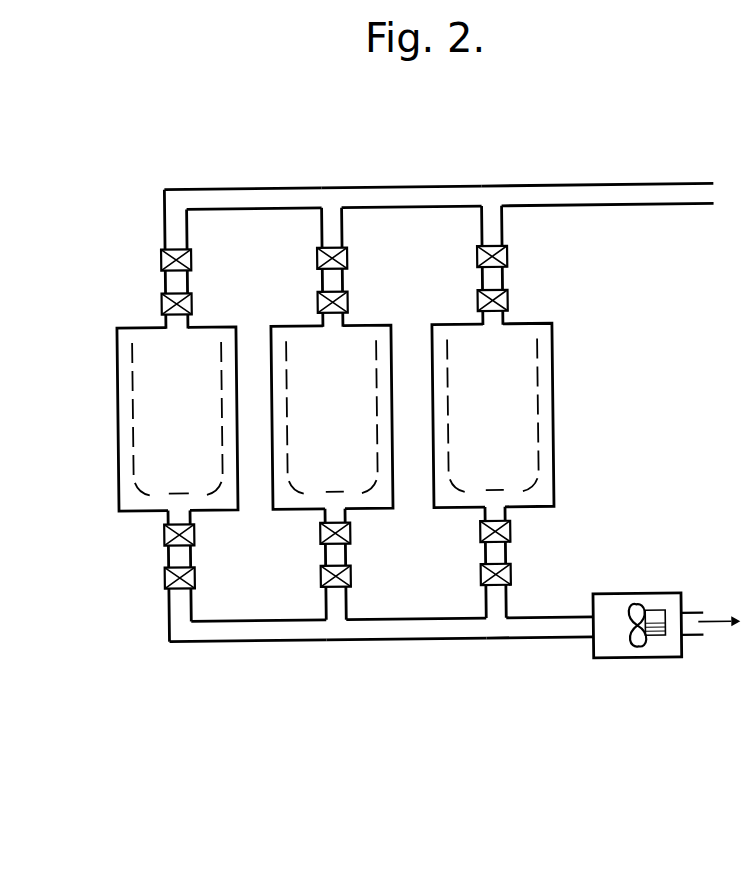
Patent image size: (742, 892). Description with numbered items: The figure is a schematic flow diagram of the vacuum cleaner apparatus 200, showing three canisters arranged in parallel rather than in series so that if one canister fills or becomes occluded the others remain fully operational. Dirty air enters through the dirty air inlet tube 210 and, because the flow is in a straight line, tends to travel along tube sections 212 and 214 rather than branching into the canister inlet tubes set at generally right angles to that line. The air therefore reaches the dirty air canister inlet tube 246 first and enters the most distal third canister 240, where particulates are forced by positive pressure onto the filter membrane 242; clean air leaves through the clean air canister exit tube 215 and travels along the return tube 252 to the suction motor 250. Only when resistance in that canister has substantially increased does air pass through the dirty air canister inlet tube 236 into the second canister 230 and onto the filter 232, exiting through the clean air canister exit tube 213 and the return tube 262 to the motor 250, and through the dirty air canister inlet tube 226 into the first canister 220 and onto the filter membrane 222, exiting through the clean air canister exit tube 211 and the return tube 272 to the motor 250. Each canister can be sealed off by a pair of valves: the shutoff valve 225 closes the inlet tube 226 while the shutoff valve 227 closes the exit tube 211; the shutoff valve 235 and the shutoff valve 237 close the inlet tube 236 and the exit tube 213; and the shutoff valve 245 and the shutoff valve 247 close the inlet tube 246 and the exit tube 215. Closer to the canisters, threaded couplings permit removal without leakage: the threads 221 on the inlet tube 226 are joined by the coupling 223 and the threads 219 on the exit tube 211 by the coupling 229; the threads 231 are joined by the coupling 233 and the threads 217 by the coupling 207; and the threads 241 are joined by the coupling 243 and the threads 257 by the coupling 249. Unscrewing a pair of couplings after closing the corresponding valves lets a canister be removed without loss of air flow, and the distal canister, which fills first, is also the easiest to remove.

The vacuum cleaner apparatus 200 is at (398, 170).
The dirty air inlet tube 210 is at (621, 184).
The tube section 212 is at (455, 191).
The tube section 214 is at (261, 186).
The dirty air canister inlet tube 246 is at (174, 229).
The shutoff valve 245 is at (194, 263).
The coupling 243 is at (163, 301).
The threads 241 is at (176, 330).
The filter membrane 242 is at (133, 457).
The third canister 240 is at (157, 438).
The threads 257 is at (177, 512).
The coupling 249 is at (161, 532).
The shutoff valve 247 is at (161, 575).
The clean air canister exit tube 215 is at (166, 607).
The return tube 252 is at (259, 640).
The dirty air canister inlet tube 236 is at (347, 239).
The shutoff valve 235 is at (352, 261).
The coupling 233 is at (319, 299).
The threads 231 is at (331, 331).
The filter 232 is at (291, 489).
The second canister 230 is at (311, 437).
The threads 217 is at (332, 514).
The coupling 207 is at (349, 534).
The shutoff valve 237 is at (318, 577).
The clean air canister exit tube 213 is at (343, 607).
The return tube 262 is at (410, 640).
The dirty air canister inlet tube 226 is at (507, 235).
The shutoff valve 225 is at (512, 259).
The coupling 223 is at (479, 301).
The threads 221 is at (493, 327).
The filter membrane 222 is at (555, 434).
The first canister 220 is at (471, 432).
The threads 219 is at (494, 509).
The coupling 229 is at (507, 535).
The shutoff valve 227 is at (506, 571).
The clean air canister exit tube 211 is at (505, 607).
The return tube 272 is at (538, 642).
The suction motor 250 is at (625, 663).